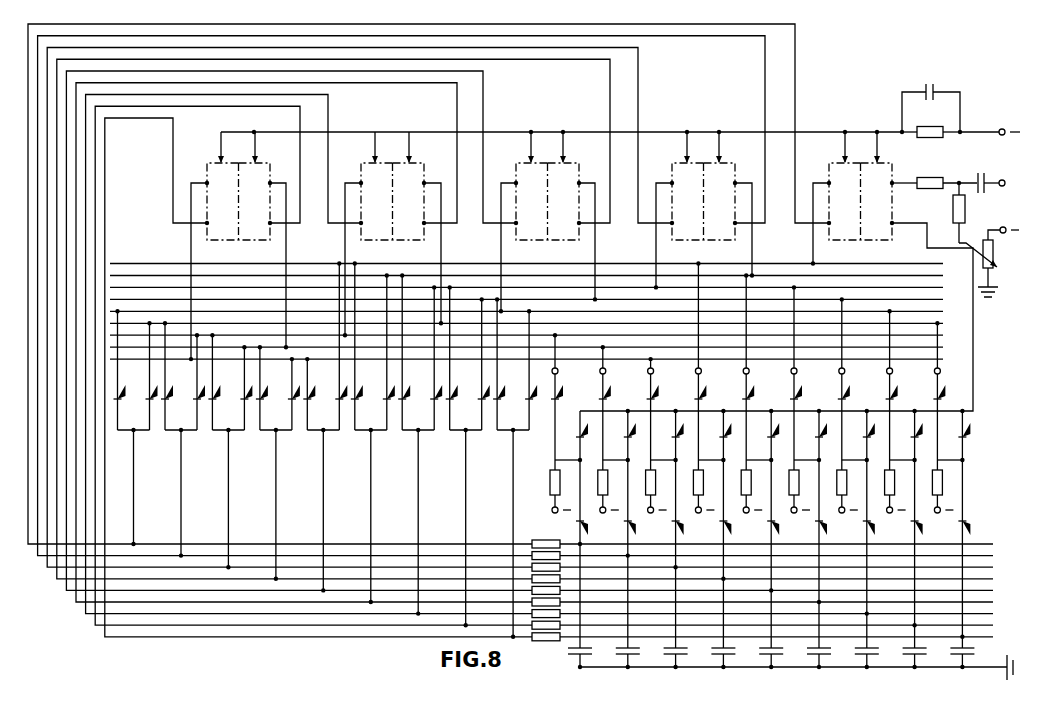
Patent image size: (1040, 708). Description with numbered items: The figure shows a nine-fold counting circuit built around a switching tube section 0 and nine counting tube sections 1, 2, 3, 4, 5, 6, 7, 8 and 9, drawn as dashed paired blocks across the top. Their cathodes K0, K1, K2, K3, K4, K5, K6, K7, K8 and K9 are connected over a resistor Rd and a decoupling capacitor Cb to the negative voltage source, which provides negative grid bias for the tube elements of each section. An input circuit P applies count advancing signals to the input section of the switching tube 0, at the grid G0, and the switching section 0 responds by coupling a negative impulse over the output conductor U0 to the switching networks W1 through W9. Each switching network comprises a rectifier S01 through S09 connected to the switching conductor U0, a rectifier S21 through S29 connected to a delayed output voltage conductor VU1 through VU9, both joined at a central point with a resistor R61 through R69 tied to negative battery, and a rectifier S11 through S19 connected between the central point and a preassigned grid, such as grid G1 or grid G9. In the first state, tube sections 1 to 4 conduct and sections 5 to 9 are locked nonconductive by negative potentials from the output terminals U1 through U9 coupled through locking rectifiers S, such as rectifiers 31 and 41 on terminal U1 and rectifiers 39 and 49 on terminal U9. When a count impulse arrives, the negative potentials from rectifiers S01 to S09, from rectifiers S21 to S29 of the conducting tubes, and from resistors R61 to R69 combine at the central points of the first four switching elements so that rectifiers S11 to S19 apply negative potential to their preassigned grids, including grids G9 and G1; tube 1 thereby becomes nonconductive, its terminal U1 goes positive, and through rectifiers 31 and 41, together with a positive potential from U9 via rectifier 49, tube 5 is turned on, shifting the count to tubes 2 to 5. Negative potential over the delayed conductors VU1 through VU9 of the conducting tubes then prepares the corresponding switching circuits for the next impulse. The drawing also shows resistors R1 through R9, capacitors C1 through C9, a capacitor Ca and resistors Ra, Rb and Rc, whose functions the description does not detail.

The switching tube section 0 is at (877, 201).
The counting tube section 1 is at (845, 201).
The counting tube section 2 is at (720, 201).
The counting tube section 3 is at (688, 201).
The counting tube section 4 is at (564, 201).
The counting tube section 5 is at (532, 201).
The counting tube section 6 is at (409, 201).
The counting tube section 7 is at (377, 201).
The counting tube section 8 is at (255, 201).
The counting tube section 9 is at (223, 201).
The cathode K0 is at (884, 147).
The cathode K1 is at (852, 147).
The cathode K2 is at (726, 147).
The cathode K3 is at (694, 147).
The cathode K4 is at (570, 147).
The cathode K5 is at (538, 147).
The cathode K6 is at (416, 147).
The cathode K7 is at (382, 147).
The cathode K8 is at (262, 147).
The cathode K9 is at (228, 147).
The rectifier S is at (118, 370).
The rectifier 31 is at (124, 370).
The rectifier 41 is at (156, 376).
The rectifier 39 is at (502, 364).
The rectifier 49 is at (534, 370).
The gate line G0 is at (904, 174).
The control grid G1 is at (538, 264).
The control grid G9 is at (538, 358).
The output conductor U0 is at (787, 320).
The output terminal U1 is at (418, 289).
The output terminal U9 is at (309, 384).
The delayed anode conductor VU1 is at (791, 545).
The delayed anode conductor VU9 is at (791, 637).
The switching network W1 is at (566, 357).
The switching network W9 is at (927, 352).
The rectifier S11 is at (567, 422).
The rectifier S19 is at (950, 422).
The rectifier S01 is at (573, 435).
The rectifier S09 is at (976, 435).
The rectifier S21 is at (573, 554).
The rectifier S29 is at (975, 554).
The resistor R1 is at (545, 536).
The resistor R9 is at (546, 647).
The resistor R61 is at (550, 491).
The resistor R69 is at (940, 491).
The capacitor C1 is at (573, 657).
The capacitor C9 is at (971, 657).
The capacitor Ca is at (978, 175).
The decoupling capacitor Cb is at (931, 100).
The resistor Rc is at (930, 192).
The resistor Rd is at (931, 142).
The variable resistor Ra is at (989, 262).
The resistor Rb is at (968, 213).
The input circuit P is at (1000, 184).